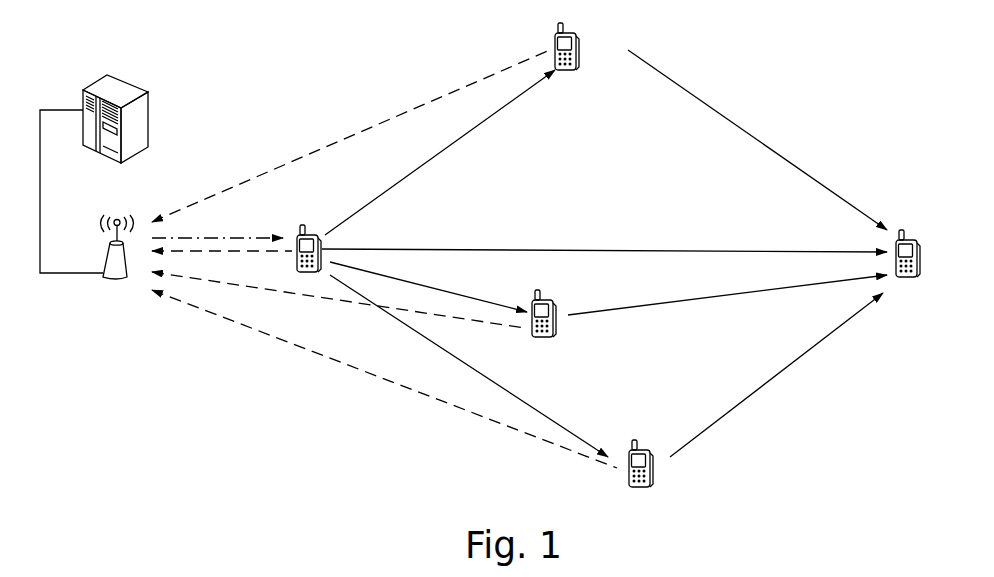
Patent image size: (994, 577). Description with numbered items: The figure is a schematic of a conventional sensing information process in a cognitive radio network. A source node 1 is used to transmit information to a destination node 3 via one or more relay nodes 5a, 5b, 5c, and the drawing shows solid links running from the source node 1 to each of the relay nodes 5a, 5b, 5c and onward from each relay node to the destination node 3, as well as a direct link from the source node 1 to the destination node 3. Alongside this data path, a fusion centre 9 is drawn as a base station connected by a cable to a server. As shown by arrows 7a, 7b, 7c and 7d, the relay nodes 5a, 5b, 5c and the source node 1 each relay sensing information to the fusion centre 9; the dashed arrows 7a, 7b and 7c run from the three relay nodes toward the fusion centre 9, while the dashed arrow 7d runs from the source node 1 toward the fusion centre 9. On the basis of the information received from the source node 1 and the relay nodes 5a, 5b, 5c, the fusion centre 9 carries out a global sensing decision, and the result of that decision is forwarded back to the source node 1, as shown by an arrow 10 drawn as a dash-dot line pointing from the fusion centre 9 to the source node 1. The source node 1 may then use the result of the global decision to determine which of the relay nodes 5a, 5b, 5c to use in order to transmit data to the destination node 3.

The source node 1 is at (312, 233).
The destination node 3 is at (920, 278).
The relay node 5a is at (579, 50).
The relay node 5b is at (552, 337).
The relay node 5c is at (643, 447).
The arrow 7a is at (425, 102).
The arrow 7b is at (347, 302).
The arrow 7c is at (377, 375).
The arrow 7d is at (223, 252).
The fusion centre 9 is at (115, 272).
The arrow 10 is at (193, 238).